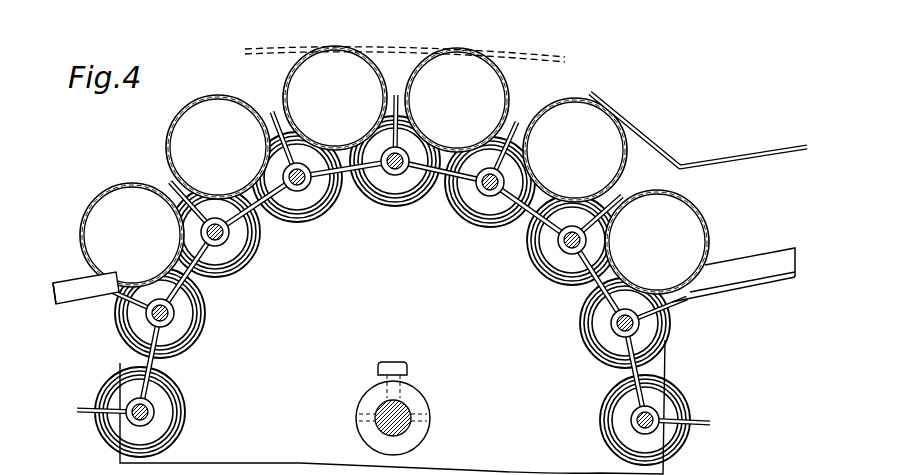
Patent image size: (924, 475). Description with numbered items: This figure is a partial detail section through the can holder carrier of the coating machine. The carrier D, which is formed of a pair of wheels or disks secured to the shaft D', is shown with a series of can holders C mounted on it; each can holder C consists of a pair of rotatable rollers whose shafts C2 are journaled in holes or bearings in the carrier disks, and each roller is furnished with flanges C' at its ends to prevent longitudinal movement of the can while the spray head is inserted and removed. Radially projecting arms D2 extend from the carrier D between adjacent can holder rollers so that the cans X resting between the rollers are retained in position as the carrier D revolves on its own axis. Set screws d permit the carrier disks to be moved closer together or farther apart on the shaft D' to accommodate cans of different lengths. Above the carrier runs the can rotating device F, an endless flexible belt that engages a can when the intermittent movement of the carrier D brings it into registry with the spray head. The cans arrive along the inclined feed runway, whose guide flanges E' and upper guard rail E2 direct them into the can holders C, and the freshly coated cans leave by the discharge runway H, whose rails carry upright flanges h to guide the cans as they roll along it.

The can rotating device F is at (396, 46).
The rollers X is at (378, 75).
The radially projecting arms D2 is at (520, 106).
The upper guard rail E2 is at (755, 154).
The guide flanges E' is at (733, 280).
The upright flanges h is at (55, 283).
The discharge runway H is at (77, 306).
The flanges C' is at (392, 290).
The shafts C2 is at (170, 313).
The can holders C is at (392, 290).
The set screws d is at (403, 363).
The carrier D is at (392, 407).
The shaft D' is at (419, 418).